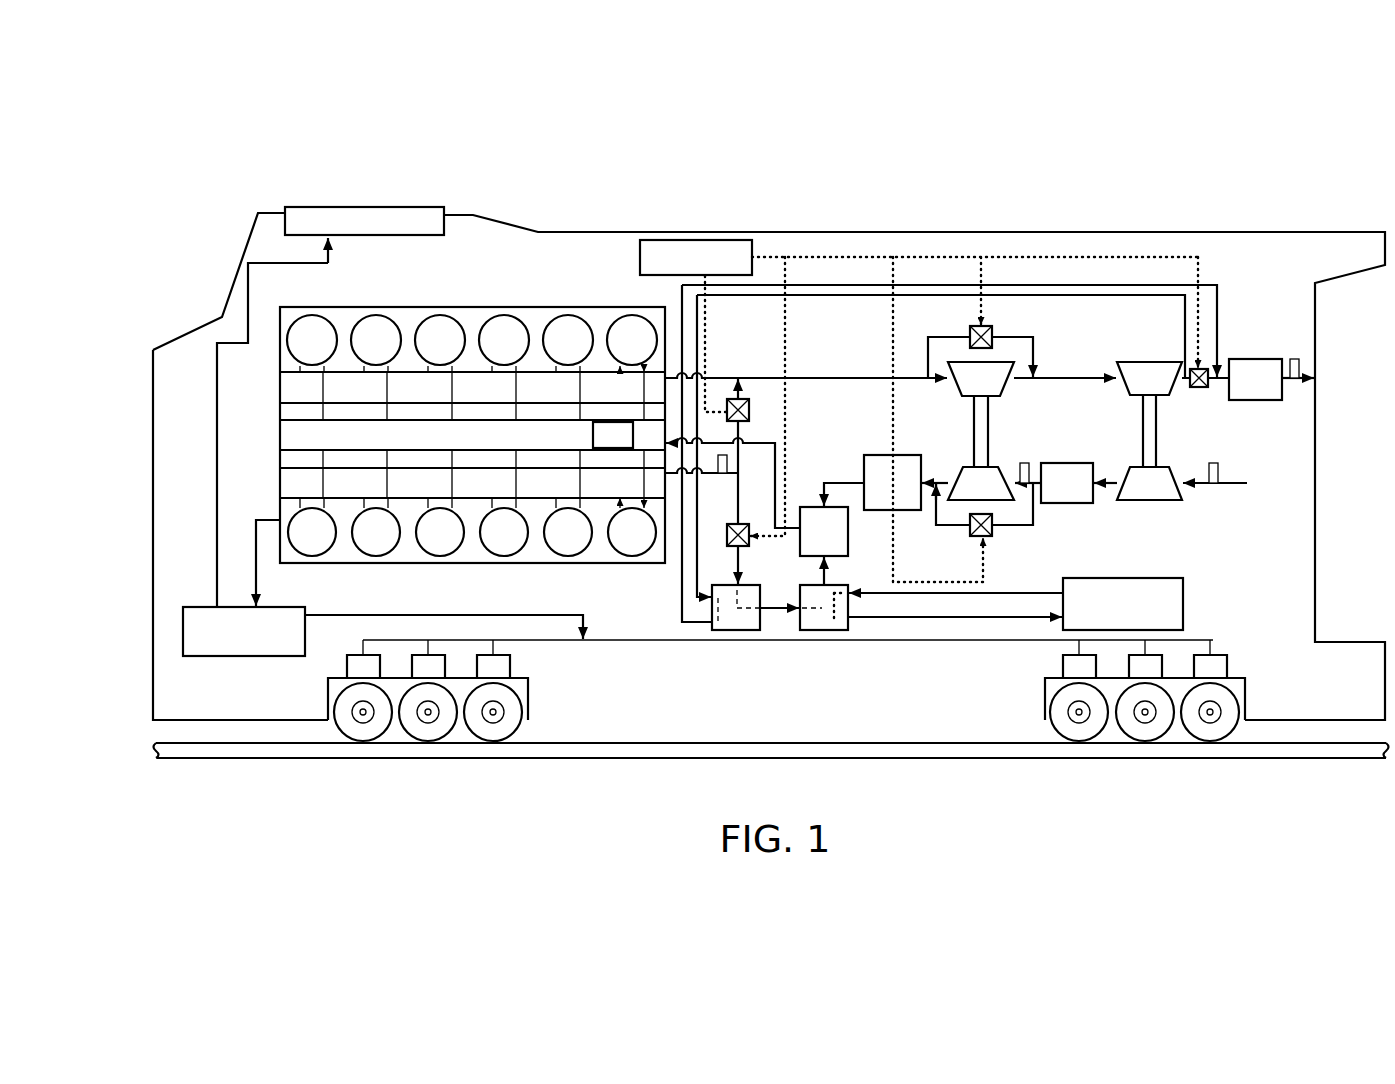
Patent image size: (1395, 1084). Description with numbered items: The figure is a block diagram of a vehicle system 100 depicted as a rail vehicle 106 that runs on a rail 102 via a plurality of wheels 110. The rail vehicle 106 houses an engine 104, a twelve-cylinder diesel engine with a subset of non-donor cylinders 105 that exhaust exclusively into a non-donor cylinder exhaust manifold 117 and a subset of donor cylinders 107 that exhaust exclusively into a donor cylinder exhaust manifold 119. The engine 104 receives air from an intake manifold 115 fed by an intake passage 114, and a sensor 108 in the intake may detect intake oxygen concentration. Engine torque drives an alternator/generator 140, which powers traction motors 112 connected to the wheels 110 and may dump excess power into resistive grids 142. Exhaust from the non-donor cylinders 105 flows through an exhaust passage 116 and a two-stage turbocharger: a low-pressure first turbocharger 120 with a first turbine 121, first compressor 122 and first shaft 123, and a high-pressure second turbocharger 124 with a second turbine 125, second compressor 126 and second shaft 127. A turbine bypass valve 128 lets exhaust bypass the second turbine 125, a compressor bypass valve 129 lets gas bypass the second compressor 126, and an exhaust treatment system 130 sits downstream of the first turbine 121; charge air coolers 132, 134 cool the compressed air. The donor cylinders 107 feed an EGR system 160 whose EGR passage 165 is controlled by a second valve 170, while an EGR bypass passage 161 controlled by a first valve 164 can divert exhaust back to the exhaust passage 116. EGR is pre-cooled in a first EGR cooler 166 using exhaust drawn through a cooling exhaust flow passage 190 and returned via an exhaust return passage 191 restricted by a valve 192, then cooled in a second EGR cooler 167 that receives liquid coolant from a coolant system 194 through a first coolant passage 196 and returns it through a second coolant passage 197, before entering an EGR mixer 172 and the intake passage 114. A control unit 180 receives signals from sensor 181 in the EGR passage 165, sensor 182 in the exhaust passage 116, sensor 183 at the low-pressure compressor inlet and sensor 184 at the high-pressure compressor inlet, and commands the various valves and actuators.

The vehicle system 100 is at (769, 443).
The rail 102 is at (1308, 760).
The engine 104 is at (450, 428).
The non-donor cylinders 105 is at (444, 315).
The rail vehicle 106 is at (1080, 232).
The donor cylinders 107 is at (440, 556).
The sensor 108 is at (613, 435).
The wheels 110 is at (517, 704).
The traction motors 112 is at (512, 672).
The intake passage 114 is at (1196, 484).
The intake manifold 115 is at (472, 435).
The exhaust passage 116 is at (822, 378).
The non-donor cylinder exhaust manifold 117 is at (280, 393).
The donor cylinder exhaust manifold 119 is at (280, 486).
The first turbocharger 120 is at (1072, 435).
The first turbine 121 is at (1149, 378).
The first compressor 122 is at (1150, 516).
The first shaft 123 is at (1157, 446).
The second turbocharger 124 is at (1004, 525).
The second turbine 125 is at (981, 379).
The second compressor 126 is at (981, 483).
The second shaft 127 is at (988, 446).
The turbine bypass valve 128 is at (994, 336).
The compressor bypass valve 129 is at (970, 530).
The exhaust treatment system 130 is at (1271, 379).
The charge air cooler 132 is at (1066, 483).
The charge air cooler 134 is at (886, 482).
The alternator/generator 140 is at (383, 588).
The resistive grids 142 is at (444, 207).
The EGR system 160 is at (777, 522).
The EGR bypass passage 161 is at (741, 455).
The first valve 164 is at (750, 410).
The EGR passage 165 is at (740, 480).
The first EGR cooler 166 is at (735, 631).
The second EGR cooler 167 is at (822, 631).
The second valve 170 is at (750, 548).
The EGR mixer 172 is at (824, 546).
The control unit 180 is at (919, 411).
The sensor 181 is at (722, 473).
The sensor 182 is at (1295, 358).
The sensor 183 is at (1213, 462).
The sensor 184 is at (1024, 462).
The cooling exhaust flow passage 190 is at (1185, 322).
The exhaust return passage 191 is at (1217, 304).
The valve 192 is at (1200, 388).
The coolant system 194 is at (1183, 604).
The first coolant passage 196 is at (1005, 595).
The second coolant passage 197 is at (966, 619).